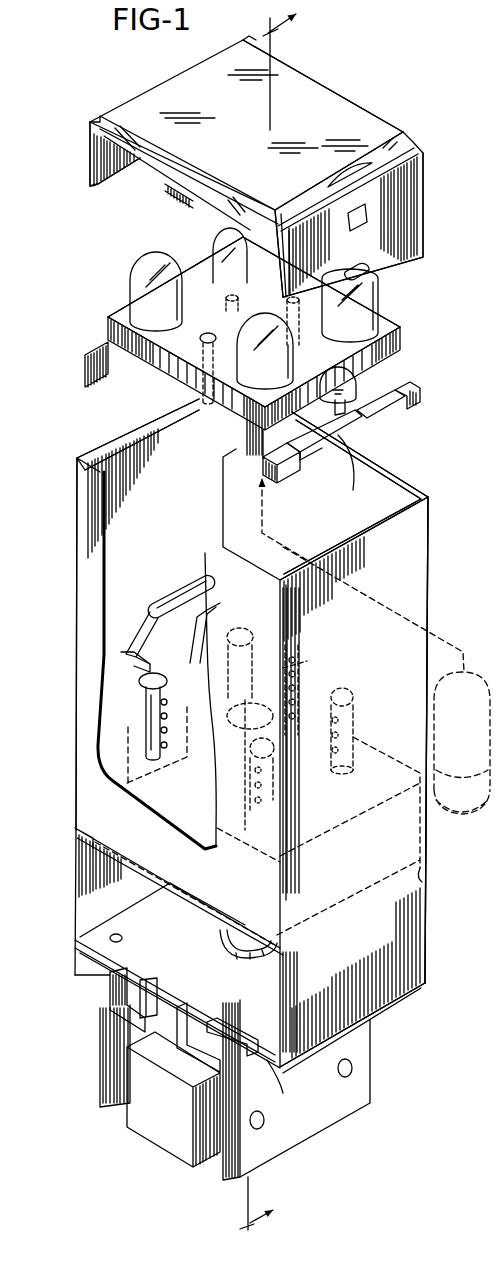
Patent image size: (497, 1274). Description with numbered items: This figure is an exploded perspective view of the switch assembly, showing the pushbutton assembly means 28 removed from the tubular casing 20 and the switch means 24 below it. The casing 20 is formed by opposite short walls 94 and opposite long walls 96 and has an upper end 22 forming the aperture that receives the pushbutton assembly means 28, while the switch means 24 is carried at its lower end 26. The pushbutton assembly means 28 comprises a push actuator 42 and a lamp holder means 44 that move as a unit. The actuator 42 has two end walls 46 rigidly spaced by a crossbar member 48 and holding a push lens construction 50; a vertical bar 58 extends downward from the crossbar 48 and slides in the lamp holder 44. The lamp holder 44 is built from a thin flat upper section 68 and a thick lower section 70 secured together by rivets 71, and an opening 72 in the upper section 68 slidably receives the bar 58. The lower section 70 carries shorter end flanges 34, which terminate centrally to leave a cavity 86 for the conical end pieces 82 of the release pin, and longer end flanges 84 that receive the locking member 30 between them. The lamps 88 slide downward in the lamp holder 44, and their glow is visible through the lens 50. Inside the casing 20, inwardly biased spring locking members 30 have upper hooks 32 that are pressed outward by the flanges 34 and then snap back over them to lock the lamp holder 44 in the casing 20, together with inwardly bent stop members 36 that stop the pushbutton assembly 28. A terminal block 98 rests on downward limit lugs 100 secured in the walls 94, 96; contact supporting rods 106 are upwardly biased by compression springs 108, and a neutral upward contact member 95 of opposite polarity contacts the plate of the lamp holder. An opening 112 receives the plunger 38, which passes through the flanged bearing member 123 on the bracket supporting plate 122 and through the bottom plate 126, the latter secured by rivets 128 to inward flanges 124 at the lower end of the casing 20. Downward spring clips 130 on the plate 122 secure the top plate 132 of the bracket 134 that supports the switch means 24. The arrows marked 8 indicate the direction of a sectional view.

The section line 8- 8 is at (277, 615).
The casing 20 is at (442, 903).
The upper end 22 is at (378, 487).
The switch means 24 is at (168, 1135).
The lower end 26 is at (397, 1013).
The pushbutton assembly means 28 is at (426, 86).
The spring locking member 30 is at (153, 632).
The upper hooks 32 is at (175, 592).
The shorter end flanges 34 is at (310, 452).
The stop members 36 is at (133, 660).
The plunger 38 is at (230, 930).
The push actuator means 42 is at (350, 97).
The lamp holder means 44 is at (407, 366).
The end walls 46 is at (390, 212).
The crossbar member 48 is at (190, 200).
The push lens construction 50 is at (297, 88).
The vertical bar 58 is at (253, 288).
The upper section 68 is at (123, 317).
The lower section 70 is at (137, 370).
The rivets 71 is at (290, 347).
The opening 72 is at (247, 317).
The conical end pieces 82 is at (340, 373).
The longer end flanges 84 is at (288, 480).
The cavity 86 is at (350, 475).
The lamps 88 is at (253, 370).
The short walls 94 is at (417, 548).
The neutral upward contact member 95 is at (307, 661).
The long walls 96 is at (80, 520).
The terminal block 98 is at (110, 770).
The limit lugs 100 is at (280, 943).
The contact supporting rods 106 is at (147, 722).
The compression springs 108 is at (143, 703).
The opening 112 is at (220, 773).
The bracket supporting plate 122 is at (127, 948).
The flanged bearing member 123 is at (230, 957).
The inward flanges 124 is at (242, 1040).
The bottom plate 126 is at (272, 1075).
The rivets 128 is at (110, 937).
The spring clips 130 is at (190, 1033).
The top plate 132 is at (167, 1027).
The bracket 134 is at (357, 1098).